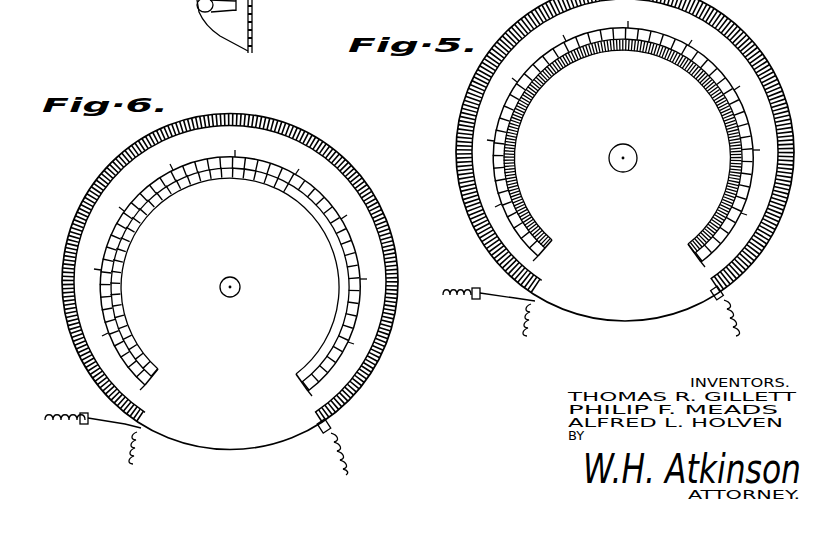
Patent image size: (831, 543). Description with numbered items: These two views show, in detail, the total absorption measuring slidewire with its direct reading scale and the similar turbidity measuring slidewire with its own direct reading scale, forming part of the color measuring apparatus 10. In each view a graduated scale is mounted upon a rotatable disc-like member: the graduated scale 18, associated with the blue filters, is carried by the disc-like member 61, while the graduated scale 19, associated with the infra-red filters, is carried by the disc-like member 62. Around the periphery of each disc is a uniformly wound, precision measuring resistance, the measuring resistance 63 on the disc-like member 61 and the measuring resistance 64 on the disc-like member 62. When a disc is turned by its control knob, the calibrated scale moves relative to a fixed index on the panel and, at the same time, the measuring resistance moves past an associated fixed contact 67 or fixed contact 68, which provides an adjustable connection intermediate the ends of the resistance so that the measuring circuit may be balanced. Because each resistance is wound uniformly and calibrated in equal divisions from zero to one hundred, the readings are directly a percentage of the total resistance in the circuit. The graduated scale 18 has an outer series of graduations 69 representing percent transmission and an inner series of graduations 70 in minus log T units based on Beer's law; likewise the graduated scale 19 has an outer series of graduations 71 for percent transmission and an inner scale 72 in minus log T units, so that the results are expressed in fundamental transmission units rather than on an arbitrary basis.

In FIG. 6, the apparatus 10 is at (237, 27).
In FIG. 5, the graduated scale 18 is at (538, 114).
In FIG. 6, the graduated scale 19 is at (178, 205).
In FIG. 5, the disc-like member 61 is at (601, 306).
In FIG. 6, the disc-like member 62 is at (268, 434).
In FIG. 5, the measuring resistance 63 is at (473, 240).
In FIG. 6, the measuring resistance 64 is at (373, 371).
In FIG. 5, the fixed contact 67 is at (514, 301).
In FIG. 6, the fixed contact 68 is at (104, 428).
In FIG. 5, the outer series of graduations 69 is at (504, 122).
In FIG. 5, the inner series of graduations 70 is at (515, 182).
In FIG. 6, the outer series of graduations 71 is at (112, 249).
In FIG. 6, the inner scale 72 is at (142, 345).